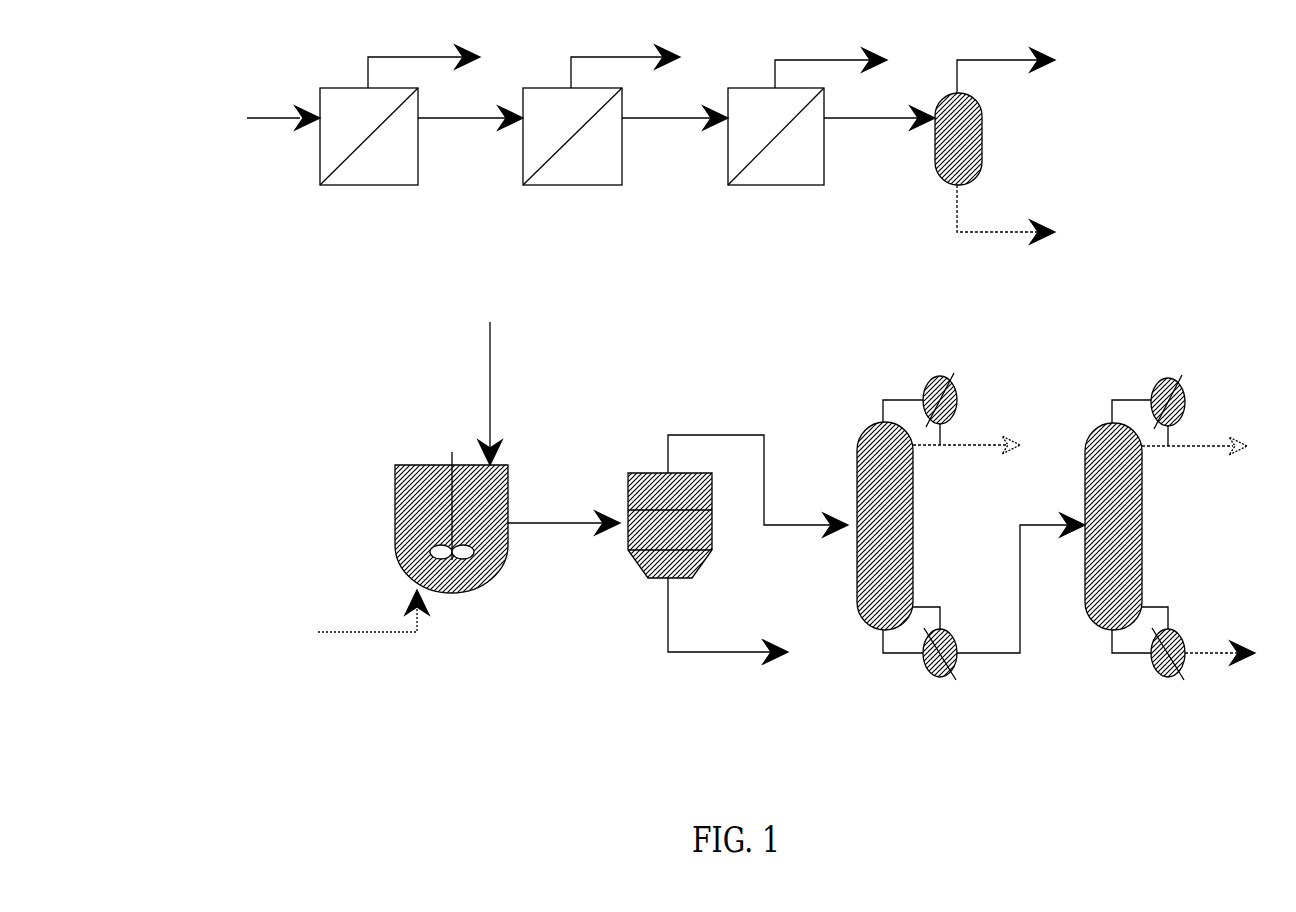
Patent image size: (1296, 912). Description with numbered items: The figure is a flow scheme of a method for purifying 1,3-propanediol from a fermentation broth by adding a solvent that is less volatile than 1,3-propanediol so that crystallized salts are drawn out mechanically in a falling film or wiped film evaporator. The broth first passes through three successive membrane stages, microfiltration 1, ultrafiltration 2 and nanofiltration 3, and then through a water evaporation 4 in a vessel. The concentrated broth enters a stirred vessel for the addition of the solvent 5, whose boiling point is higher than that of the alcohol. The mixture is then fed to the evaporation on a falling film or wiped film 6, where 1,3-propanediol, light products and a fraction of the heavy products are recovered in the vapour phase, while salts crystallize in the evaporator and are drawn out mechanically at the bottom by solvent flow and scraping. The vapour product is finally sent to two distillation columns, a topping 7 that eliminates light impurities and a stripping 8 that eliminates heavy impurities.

The microfiltration 1 is at (421, 94).
The ultrafiltration 2 is at (625, 94).
The nanofiltration 3 is at (831, 95).
The water evaporation 4 is at (993, 124).
The addition of the solvent 5 is at (450, 477).
The evaporation on a falling film or wiped film 6 is at (738, 513).
The topping 7 is at (971, 514).
The stripping 8 is at (1170, 509).